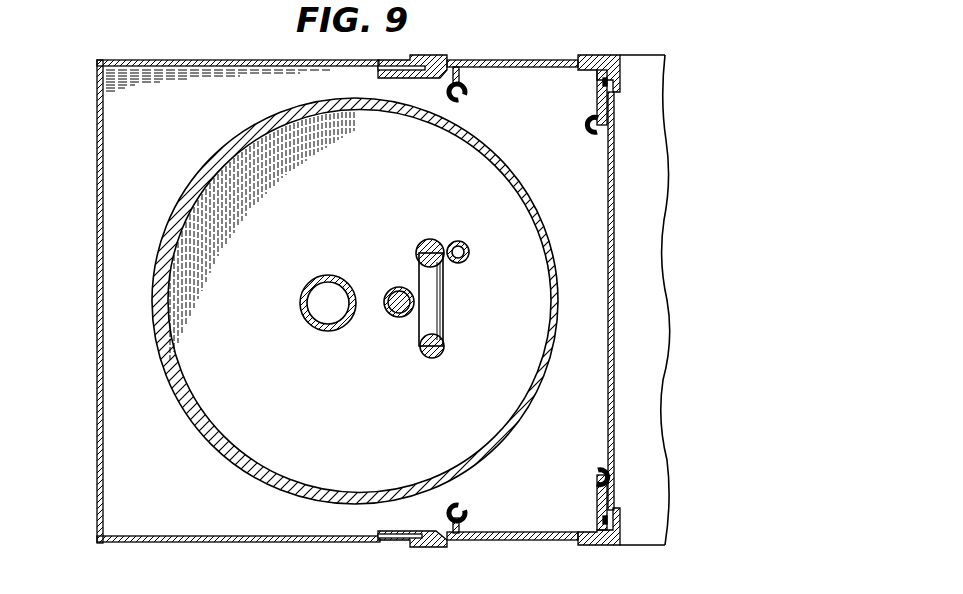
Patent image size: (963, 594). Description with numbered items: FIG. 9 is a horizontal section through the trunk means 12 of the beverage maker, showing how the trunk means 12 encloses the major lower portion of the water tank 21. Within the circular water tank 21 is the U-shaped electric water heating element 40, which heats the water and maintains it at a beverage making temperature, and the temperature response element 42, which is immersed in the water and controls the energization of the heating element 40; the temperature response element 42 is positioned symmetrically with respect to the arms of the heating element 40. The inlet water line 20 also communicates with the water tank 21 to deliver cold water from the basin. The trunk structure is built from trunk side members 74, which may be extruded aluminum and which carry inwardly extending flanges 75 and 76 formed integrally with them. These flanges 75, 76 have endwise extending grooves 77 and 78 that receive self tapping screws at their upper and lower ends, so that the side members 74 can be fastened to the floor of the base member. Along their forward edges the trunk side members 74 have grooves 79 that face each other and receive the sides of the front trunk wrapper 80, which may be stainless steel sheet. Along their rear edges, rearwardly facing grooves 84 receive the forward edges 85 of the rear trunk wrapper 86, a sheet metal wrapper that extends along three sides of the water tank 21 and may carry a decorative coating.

The trunk means 12 is at (72, 478).
The inlet water line 20 is at (327, 280).
The water tank 21 is at (205, 437).
The U-shaped electric water heating element 40 is at (444, 292).
The temperature response element 42 is at (392, 290).
The trunk side members 74 is at (500, 61).
The inwardly extending flange 75 is at (461, 72).
The inwardly extending flange 76 is at (597, 93).
The endwise extending groove 77 is at (459, 99).
The endwise extending groove 78 is at (583, 125).
The grooves 79 is at (600, 68).
The front trunk wrapper 80 is at (615, 297).
The rearwardly facing grooves 84 is at (423, 72).
The forward edges 85 is at (417, 63).
The rear trunk wrapper 86 is at (97, 277).